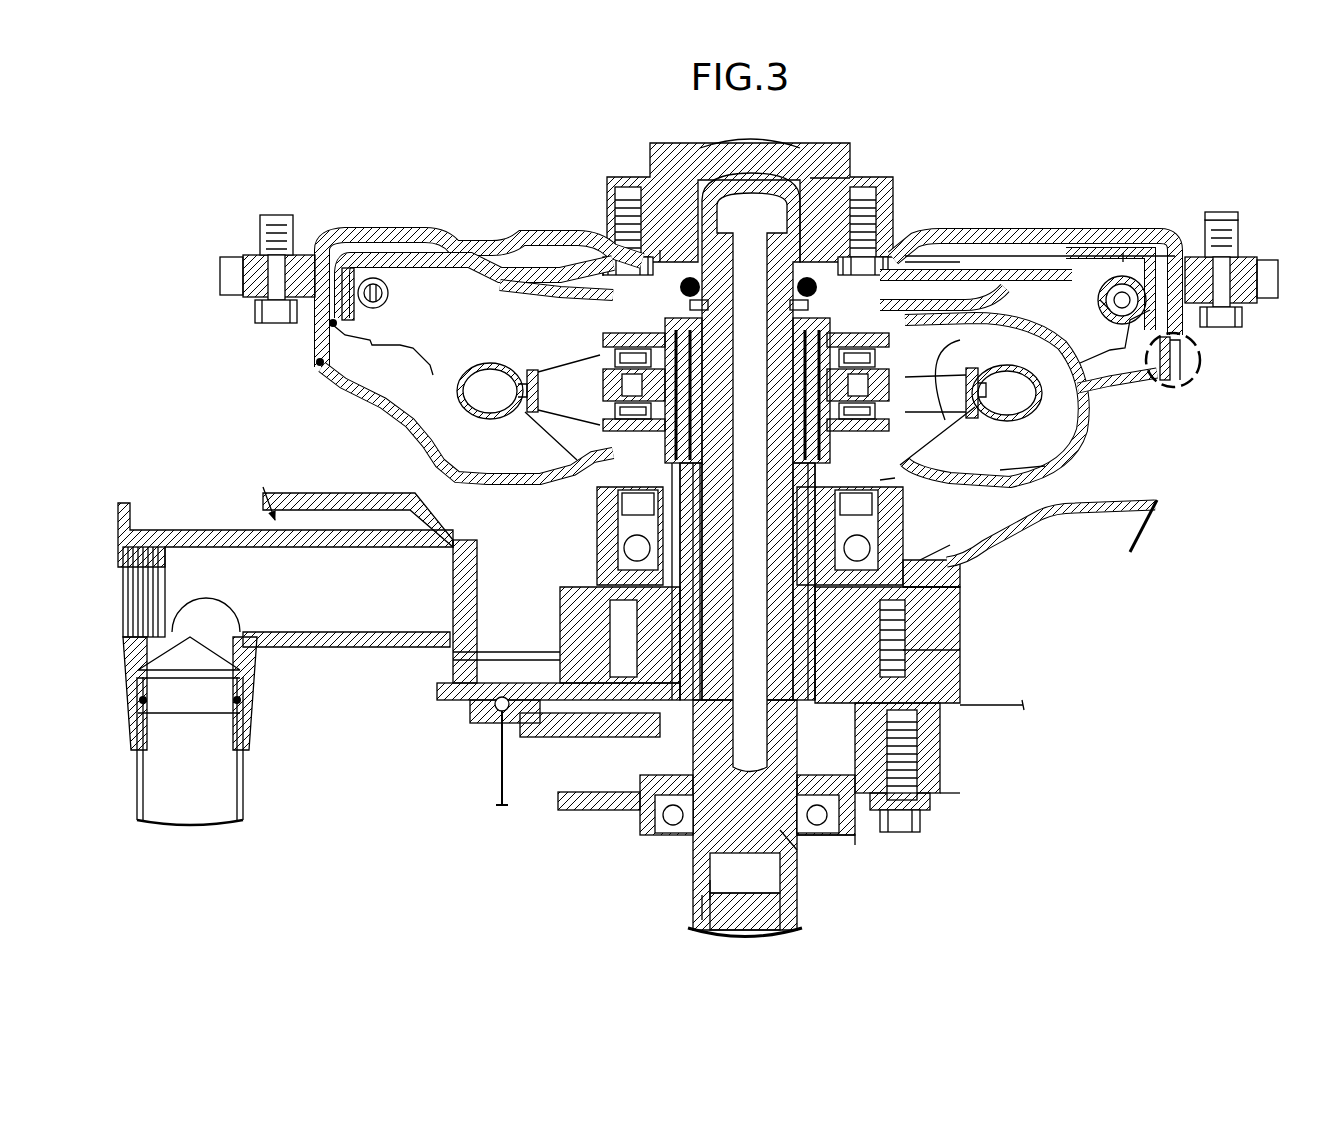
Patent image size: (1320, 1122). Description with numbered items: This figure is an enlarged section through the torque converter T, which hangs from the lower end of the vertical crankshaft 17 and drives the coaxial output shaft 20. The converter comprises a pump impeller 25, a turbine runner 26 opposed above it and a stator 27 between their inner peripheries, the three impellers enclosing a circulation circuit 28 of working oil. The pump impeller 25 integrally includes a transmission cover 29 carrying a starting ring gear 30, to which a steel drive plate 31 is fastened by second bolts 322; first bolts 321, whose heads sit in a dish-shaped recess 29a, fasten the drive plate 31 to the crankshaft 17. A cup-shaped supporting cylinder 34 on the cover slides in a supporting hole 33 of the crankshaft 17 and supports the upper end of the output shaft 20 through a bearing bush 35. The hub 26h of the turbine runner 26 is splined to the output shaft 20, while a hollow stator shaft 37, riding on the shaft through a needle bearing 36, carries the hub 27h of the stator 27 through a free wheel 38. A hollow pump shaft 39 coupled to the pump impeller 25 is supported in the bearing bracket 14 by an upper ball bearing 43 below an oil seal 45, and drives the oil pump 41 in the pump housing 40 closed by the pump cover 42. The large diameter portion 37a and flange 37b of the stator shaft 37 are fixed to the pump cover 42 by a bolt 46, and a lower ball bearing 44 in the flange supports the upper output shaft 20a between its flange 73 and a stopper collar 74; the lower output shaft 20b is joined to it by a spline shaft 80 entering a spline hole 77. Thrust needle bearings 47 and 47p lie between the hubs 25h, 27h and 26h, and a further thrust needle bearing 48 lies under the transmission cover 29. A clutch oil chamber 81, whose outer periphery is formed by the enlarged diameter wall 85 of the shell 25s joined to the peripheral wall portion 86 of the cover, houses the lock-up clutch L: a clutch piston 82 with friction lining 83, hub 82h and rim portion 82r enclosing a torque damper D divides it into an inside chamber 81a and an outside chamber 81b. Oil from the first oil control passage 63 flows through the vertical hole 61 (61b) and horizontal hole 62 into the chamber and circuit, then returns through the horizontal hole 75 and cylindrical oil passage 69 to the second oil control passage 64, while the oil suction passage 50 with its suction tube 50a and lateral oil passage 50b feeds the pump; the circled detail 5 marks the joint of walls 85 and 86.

The detail circle 5 is at (1203, 370).
The bearing bracket 14 is at (1057, 513).
The crankshaft 17 is at (705, 150).
The output shaft 20 is at (715, 532).
The upper output shaft 20a is at (607, 541).
The lower output shaft 20b is at (780, 923).
The pump impeller 25 is at (1092, 433).
The hub of the pump impeller 25h is at (877, 421).
The shell of the pump impeller 25s is at (1047, 467).
The turbine runner 26 is at (1027, 300).
The hub of the turbine runner 26h is at (893, 346).
The stator 27 is at (984, 388).
The hub of the stator 27h is at (887, 364).
The circulation circuit 28 is at (986, 446).
The transmission cover 29 is at (1030, 265).
The dish-shaped recess 29a is at (600, 247).
The ring gear 30 is at (1265, 287).
The drive plate 31 is at (410, 230).
The first bolts 321 is at (605, 250).
The second bolts 322 is at (273, 318).
The supporting hole 33 is at (733, 180).
The supporting cylinder 34 is at (795, 178).
The bearing bush 35 is at (700, 268).
The needle bearing 36 is at (793, 417).
The stator shaft 37 is at (887, 530).
The large diameter portion 37a is at (643, 847).
The flange 37b is at (947, 797).
The free wheel 38 is at (867, 388).
The pump shaft 39 is at (880, 624).
The pump housing 40 is at (887, 605).
The oil pump 41 is at (890, 643).
The pump cover 42 is at (933, 762).
The upper ball bearing 43 is at (930, 547).
The lower ball bearing 44 is at (822, 825).
The oil seal 45 is at (882, 478).
The bolt 46 is at (925, 832).
The thrust needle bearing 47 is at (600, 389).
The thrust needle bearing 47p is at (517, 370).
The thrust needle bearing 48 is at (640, 256).
The oil suction passage 50 is at (243, 587).
The suction tube 50a is at (227, 770).
The lateral oil passage 50b is at (353, 590).
The vertical hole 61 is at (795, 832).
The bracket 61b is at (506, 611).
The horizontal hole 62 is at (750, 290).
The first oil control passage 63 is at (977, 705).
The second oil control passage 64 is at (503, 747).
The cylindrical oil passage 69 is at (697, 700).
The flange 73 is at (880, 817).
The stopper collar 74 is at (822, 830).
The horizontal hole 75 is at (700, 460).
The spline hole 77 is at (710, 907).
The spline shaft 80 is at (767, 903).
The clutch oil chamber 81 is at (975, 128).
The inside chamber 81a is at (983, 310).
The outside chamber 81b is at (957, 290).
The clutch piston 82 is at (1062, 272).
The hub of the clutch piston 82h is at (925, 262).
The annular rim portion 82r is at (1157, 290).
The annular friction lining 83 is at (1127, 262).
The enlarged diameter wall 85 is at (1177, 380).
The cylindrical peripheral wall portion 86 is at (1195, 349).
The torque converter T is at (936, 258).
The lock-up clutch L is at (1123, 253).
The torque damper D is at (1098, 311).